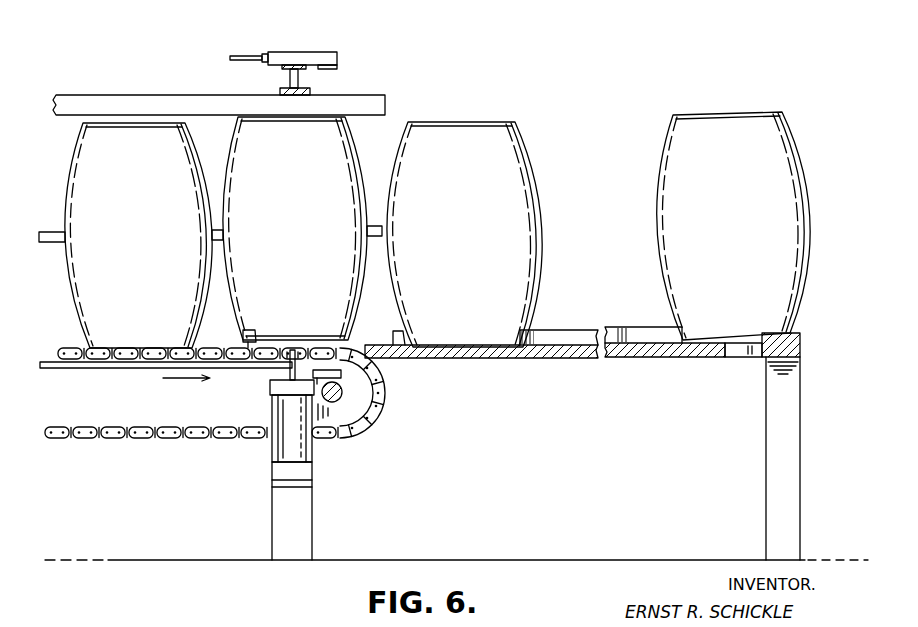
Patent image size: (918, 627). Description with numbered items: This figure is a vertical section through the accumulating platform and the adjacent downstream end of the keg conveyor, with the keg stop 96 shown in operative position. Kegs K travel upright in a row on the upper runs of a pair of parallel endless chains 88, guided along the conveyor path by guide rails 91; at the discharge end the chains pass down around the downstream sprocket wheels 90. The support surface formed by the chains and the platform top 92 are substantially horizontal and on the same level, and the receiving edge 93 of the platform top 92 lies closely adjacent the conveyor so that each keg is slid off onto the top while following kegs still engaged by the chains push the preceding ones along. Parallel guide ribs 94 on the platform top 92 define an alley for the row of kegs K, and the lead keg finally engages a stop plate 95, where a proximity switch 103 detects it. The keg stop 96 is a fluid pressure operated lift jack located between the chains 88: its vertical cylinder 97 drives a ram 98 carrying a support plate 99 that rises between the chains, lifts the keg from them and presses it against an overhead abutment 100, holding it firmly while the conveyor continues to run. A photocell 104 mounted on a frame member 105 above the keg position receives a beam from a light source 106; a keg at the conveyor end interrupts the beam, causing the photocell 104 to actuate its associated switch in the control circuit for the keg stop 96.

The keg K is at (120, 137).
The endless chains 88 is at (379, 383).
The downstream sprocket wheels 90 is at (352, 433).
The guide rails 91 is at (51, 232).
The platform top 92 is at (542, 357).
The receiving edge 93 is at (393, 340).
The guide ribs 94 is at (645, 328).
The stop plate 95 is at (800, 343).
The keg stop 96 is at (261, 415).
The vertical cylinder 97 is at (306, 456).
The ram 98 is at (284, 376).
The support plate 99 is at (243, 335).
The overhead abutment 100 is at (209, 100).
The proximity switch 103 is at (742, 358).
The photocell 104 is at (328, 52).
The frame member 105 is at (282, 78).
The light source 106 is at (344, 397).